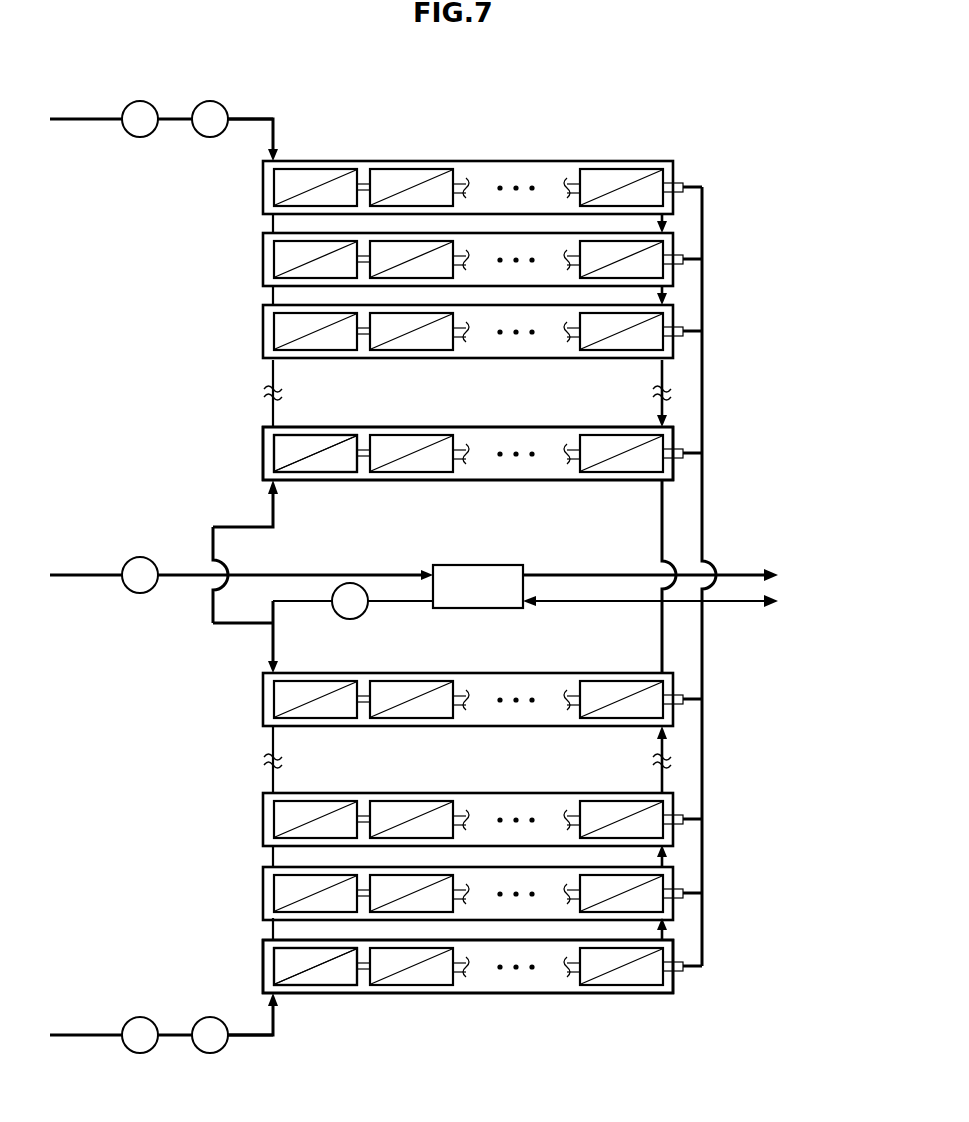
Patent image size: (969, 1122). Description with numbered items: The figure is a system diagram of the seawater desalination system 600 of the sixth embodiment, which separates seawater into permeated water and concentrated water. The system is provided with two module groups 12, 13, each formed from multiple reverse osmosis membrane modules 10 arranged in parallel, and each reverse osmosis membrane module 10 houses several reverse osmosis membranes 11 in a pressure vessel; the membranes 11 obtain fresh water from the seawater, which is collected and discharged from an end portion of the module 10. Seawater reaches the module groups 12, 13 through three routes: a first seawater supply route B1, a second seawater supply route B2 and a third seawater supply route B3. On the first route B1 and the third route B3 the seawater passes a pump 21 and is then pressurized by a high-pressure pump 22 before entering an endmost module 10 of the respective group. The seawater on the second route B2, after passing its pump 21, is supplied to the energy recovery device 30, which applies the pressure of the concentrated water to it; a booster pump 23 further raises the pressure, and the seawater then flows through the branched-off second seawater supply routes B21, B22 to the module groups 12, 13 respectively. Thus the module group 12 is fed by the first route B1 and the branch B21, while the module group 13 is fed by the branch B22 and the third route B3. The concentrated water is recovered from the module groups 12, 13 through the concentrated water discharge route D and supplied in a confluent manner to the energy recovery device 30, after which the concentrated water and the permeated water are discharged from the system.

The seawater desalination system 600 is at (478, 84).
The module group 13 is at (258, 160).
The module group 12 is at (258, 673).
The reverse osmosis membrane module 10 is at (305, 492).
The reverse osmosis membrane 11 is at (343, 464).
The pump 21 is at (140, 101).
The high-pressure pump 22 is at (210, 101).
The booster pump 23 is at (362, 615).
The energy recovery device 30 is at (481, 565).
The first seawater supply route B1 is at (260, 1041).
The second seawater supply route B2 is at (186, 572).
The branched-off second seawater supply route B21 is at (272, 637).
The branched-off second seawater supply route B22 is at (232, 527).
The third seawater supply route B3 is at (250, 117).
The concentrated water discharge route D is at (657, 518).